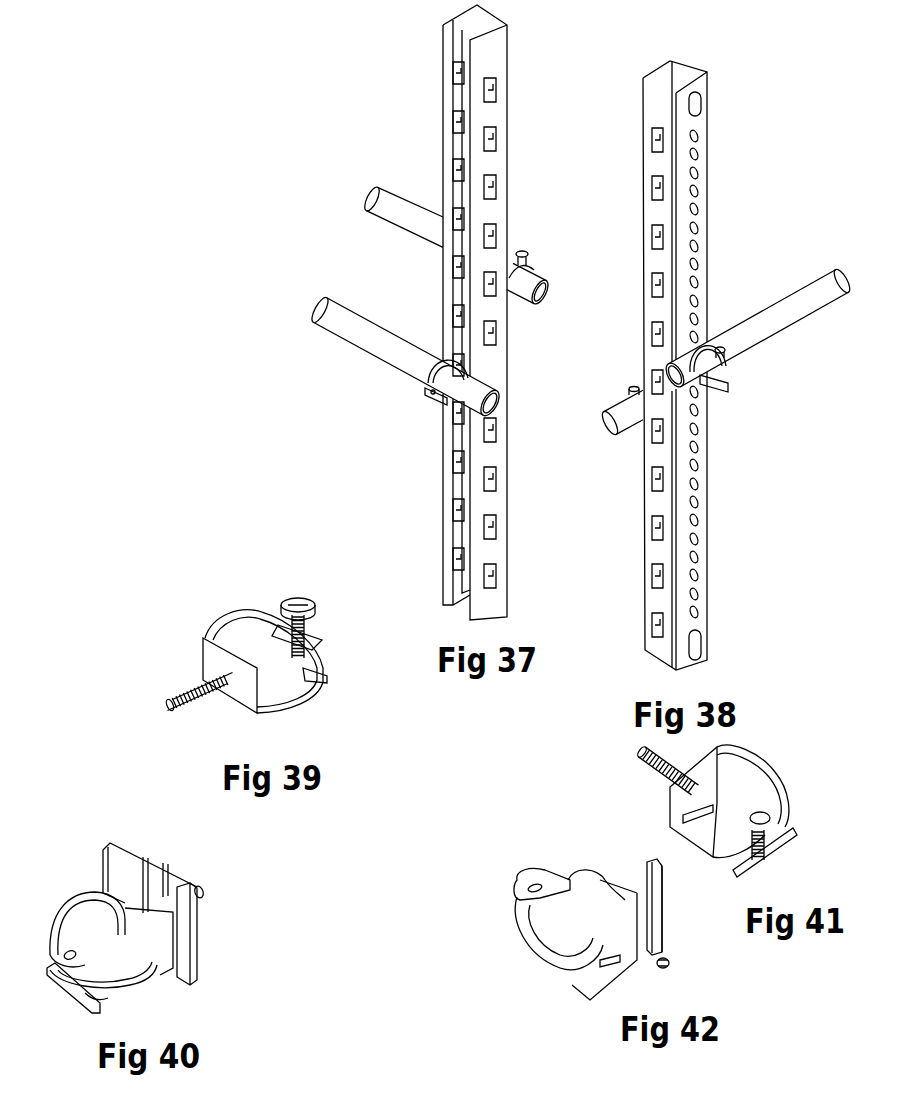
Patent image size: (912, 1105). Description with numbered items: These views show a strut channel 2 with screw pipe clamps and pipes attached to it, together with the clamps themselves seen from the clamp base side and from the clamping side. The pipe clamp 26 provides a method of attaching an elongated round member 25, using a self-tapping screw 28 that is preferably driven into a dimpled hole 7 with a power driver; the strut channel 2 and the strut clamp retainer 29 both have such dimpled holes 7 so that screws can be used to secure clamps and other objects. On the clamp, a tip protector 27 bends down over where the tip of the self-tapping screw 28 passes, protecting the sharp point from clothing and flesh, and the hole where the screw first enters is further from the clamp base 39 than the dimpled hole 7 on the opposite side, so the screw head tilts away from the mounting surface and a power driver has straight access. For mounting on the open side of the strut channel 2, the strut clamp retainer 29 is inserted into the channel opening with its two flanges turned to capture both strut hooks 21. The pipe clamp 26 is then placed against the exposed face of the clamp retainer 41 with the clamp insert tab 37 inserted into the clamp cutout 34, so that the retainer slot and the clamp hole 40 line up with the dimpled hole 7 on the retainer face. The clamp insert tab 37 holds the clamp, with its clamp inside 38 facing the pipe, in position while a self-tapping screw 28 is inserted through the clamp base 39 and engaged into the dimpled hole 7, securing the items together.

In FIG. 37, the strut channel 2 is at (492, 53).
In FIG. 38, the strut channel 2 is at (643, 110).
In FIG. 38, the dimpled hole 7 is at (693, 152).
In FIG. 40, the dimpled hole 7 is at (95, 995).
In FIG. 37, the strut hook 21 is at (453, 498).
In FIG. 37, the round member 25 is at (430, 302).
In FIG. 38, the round member 25 is at (725, 352).
In FIG. 37, the pipe clamp 26 is at (523, 256).
In FIG. 38, the pipe clamp 26 is at (707, 337).
In FIG. 39, the pipe clamp 26 is at (205, 584).
In FIG. 40, the pipe clamp 26 is at (86, 867).
In FIG. 41, the pipe clamp 26 is at (784, 758).
In FIG. 42, the pipe clamp 26 is at (546, 991).
In FIG. 39, the tip protector 27 is at (318, 673).
In FIG. 40, the tip protector 27 is at (80, 1005).
In FIG. 41, the tip protector 27 is at (770, 860).
In FIG. 42, the tip protector 27 is at (542, 911).
In FIG. 39, the self-tapping screw 28 is at (305, 605).
In FIG. 41, the self-tapping screw 28 is at (660, 782).
In FIG. 42, the self-tapping screw 28 is at (668, 963).
In FIG. 40, the strut clamp retainer 29 is at (195, 925).
In FIG. 42, the strut clamp retainer 29 is at (645, 885).
In FIG. 41, the clamp cutout 34 is at (690, 812).
In FIG. 40, the clamp insert tab 37 is at (150, 875).
In FIG. 39, the clamp inside 38 is at (264, 661).
In FIG. 40, the clamp inside 38 is at (103, 975).
In FIG. 41, the clamp inside 38 is at (751, 801).
In FIG. 42, the clamp inside 38 is at (570, 920).
In FIG. 39, the clamp base 39 is at (235, 693).
In FIG. 40, the clamp base 39 is at (155, 943).
In FIG. 41, the clamp base 39 is at (642, 752).
In FIG. 42, the clamp base 39 is at (623, 920).
In FIG. 40, the clamp hole 40 is at (72, 907).
In FIG. 40, the clamp retainer 41 is at (199, 889).
In FIG. 42, the clamp retainer 41 is at (662, 880).